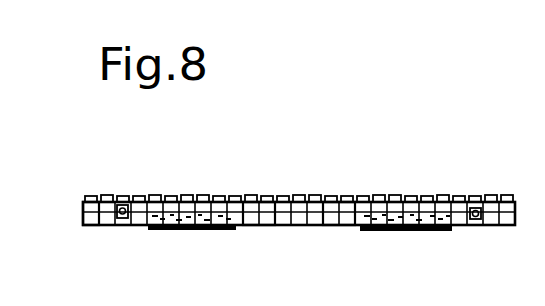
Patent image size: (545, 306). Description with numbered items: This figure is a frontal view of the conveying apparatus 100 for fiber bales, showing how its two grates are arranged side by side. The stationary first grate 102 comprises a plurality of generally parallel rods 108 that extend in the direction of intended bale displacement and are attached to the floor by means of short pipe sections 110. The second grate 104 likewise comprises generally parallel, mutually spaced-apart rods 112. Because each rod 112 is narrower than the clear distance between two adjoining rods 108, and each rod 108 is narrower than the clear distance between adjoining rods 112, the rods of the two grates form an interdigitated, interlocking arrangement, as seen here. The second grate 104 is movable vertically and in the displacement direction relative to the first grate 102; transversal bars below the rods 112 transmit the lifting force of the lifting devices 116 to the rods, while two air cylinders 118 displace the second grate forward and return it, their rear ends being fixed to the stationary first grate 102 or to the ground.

The conveying apparatus 100 is at (138, 186).
The first grate 102 is at (250, 198).
The second grate 104 is at (335, 198).
The rods 108 is at (93, 196).
The pipe sections 110 is at (84, 222).
The rods 112 is at (105, 196).
The lifting devices 116 is at (172, 230).
The air cylinders 118 is at (125, 220).